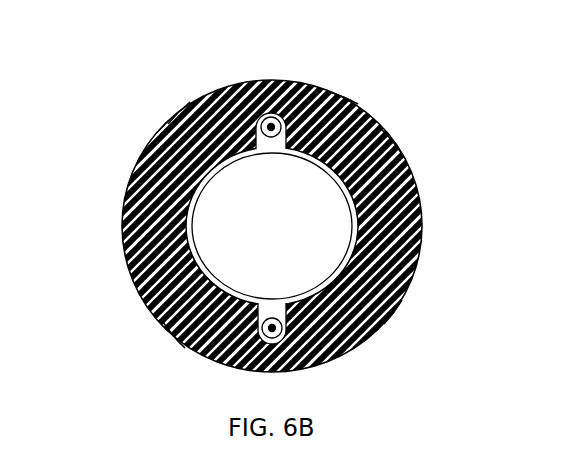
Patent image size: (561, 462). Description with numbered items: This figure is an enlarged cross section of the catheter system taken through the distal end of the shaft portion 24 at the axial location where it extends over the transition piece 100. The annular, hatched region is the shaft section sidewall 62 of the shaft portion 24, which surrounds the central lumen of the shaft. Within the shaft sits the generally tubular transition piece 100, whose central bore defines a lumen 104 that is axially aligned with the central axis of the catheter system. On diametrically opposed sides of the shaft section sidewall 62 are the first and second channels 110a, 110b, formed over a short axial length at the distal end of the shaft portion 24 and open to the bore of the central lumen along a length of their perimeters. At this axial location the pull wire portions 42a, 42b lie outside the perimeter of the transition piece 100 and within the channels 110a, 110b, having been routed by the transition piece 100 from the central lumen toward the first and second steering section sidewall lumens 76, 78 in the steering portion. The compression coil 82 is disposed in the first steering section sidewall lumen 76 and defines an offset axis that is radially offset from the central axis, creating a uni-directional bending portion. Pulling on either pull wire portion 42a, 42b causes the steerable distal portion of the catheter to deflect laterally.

The shaft portion 24 is at (418, 184).
The shaft section sidewall 62 is at (393, 141).
The first steering section sidewall lumen 76 is at (179, 113).
The lumen 104 is at (220, 216).
The transition piece 100 is at (173, 337).
The pull wire portion 42a is at (272, 81).
The pull wire portion 42b is at (328, 362).
The compression coil 82 is at (287, 82).
The second steering section sidewall lumen 78 is at (268, 372).
The first channel 110a is at (344, 100).
The second channel 110b is at (394, 312).